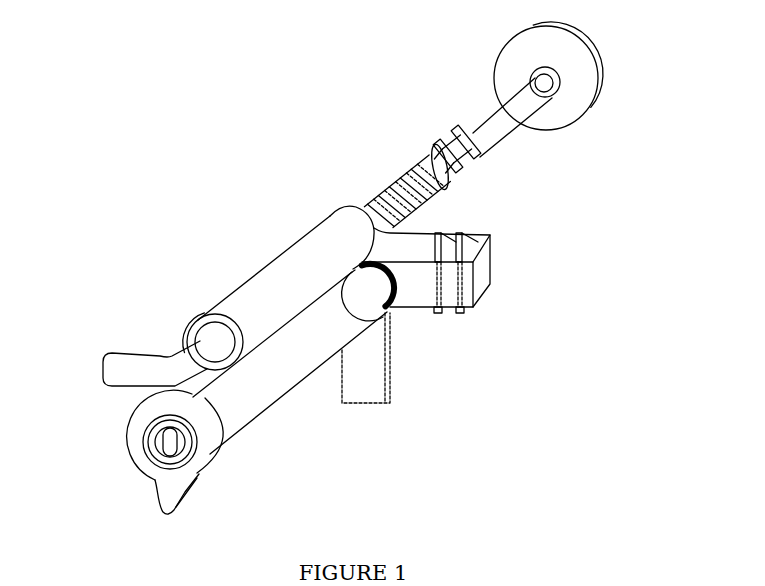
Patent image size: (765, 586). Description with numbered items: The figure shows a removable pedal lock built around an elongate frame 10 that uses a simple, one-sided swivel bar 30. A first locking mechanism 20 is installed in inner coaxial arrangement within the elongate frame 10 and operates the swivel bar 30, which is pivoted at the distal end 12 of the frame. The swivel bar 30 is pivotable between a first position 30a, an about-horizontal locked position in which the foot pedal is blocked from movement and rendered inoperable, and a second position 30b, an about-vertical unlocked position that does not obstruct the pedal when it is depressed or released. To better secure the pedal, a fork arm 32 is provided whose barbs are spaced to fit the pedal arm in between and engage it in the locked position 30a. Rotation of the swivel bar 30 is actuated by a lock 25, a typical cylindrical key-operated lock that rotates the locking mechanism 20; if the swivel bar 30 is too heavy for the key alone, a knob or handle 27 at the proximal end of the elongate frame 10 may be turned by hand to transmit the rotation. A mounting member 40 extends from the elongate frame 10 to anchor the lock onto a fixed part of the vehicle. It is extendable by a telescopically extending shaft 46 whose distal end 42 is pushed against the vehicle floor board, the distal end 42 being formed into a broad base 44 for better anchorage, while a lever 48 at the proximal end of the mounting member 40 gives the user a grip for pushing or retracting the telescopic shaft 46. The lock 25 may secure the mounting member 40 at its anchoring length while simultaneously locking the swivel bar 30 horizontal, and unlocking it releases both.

The elongate frame 10 is at (255, 428).
The distal end 12 is at (362, 297).
The first locking mechanism 20 is at (282, 372).
The lock 25 is at (153, 446).
The knob or handle 27 is at (165, 501).
The swivel bar 30 is at (423, 313).
The first position 30a is at (474, 290).
The second position 30b is at (392, 388).
The fork arm 32 is at (490, 251).
The mounting member 40 is at (273, 280).
The distal end 42 is at (532, 76).
The broad base 44 is at (560, 129).
The telescopically extending shaft 46 is at (485, 118).
The lever 48 is at (110, 369).